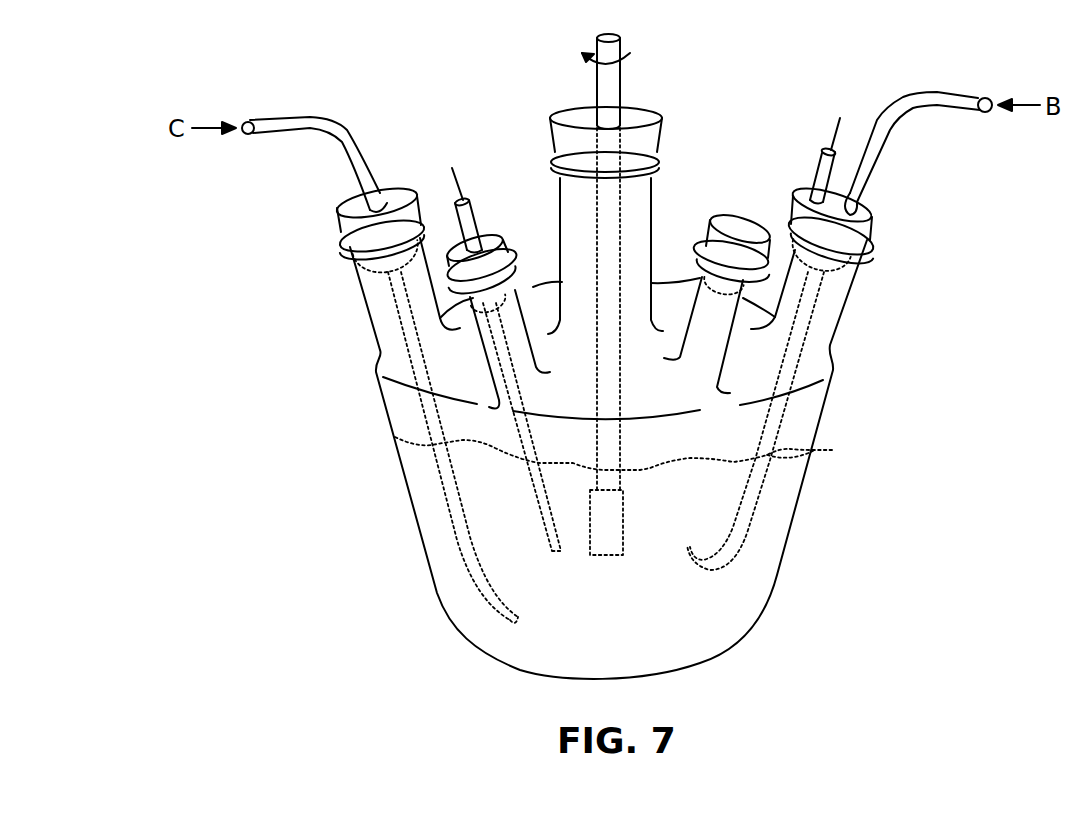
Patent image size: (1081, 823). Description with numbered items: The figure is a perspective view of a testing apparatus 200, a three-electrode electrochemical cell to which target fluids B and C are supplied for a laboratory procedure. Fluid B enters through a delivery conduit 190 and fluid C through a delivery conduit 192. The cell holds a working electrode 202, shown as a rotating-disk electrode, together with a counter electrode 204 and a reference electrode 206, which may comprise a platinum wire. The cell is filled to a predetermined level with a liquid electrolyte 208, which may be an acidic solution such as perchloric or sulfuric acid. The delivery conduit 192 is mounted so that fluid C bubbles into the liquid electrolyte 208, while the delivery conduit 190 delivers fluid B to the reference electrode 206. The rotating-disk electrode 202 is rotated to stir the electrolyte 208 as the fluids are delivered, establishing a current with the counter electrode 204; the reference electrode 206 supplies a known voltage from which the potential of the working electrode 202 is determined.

The delivery conduit 190 is at (878, 138).
The delivery conduit 192 is at (353, 127).
The testing apparatus 200 is at (715, 93).
The working electrode 202 is at (610, 557).
The counter electrode 204 is at (470, 227).
The reference electrode 206 is at (820, 170).
The liquid electrolyte 208 is at (833, 450).